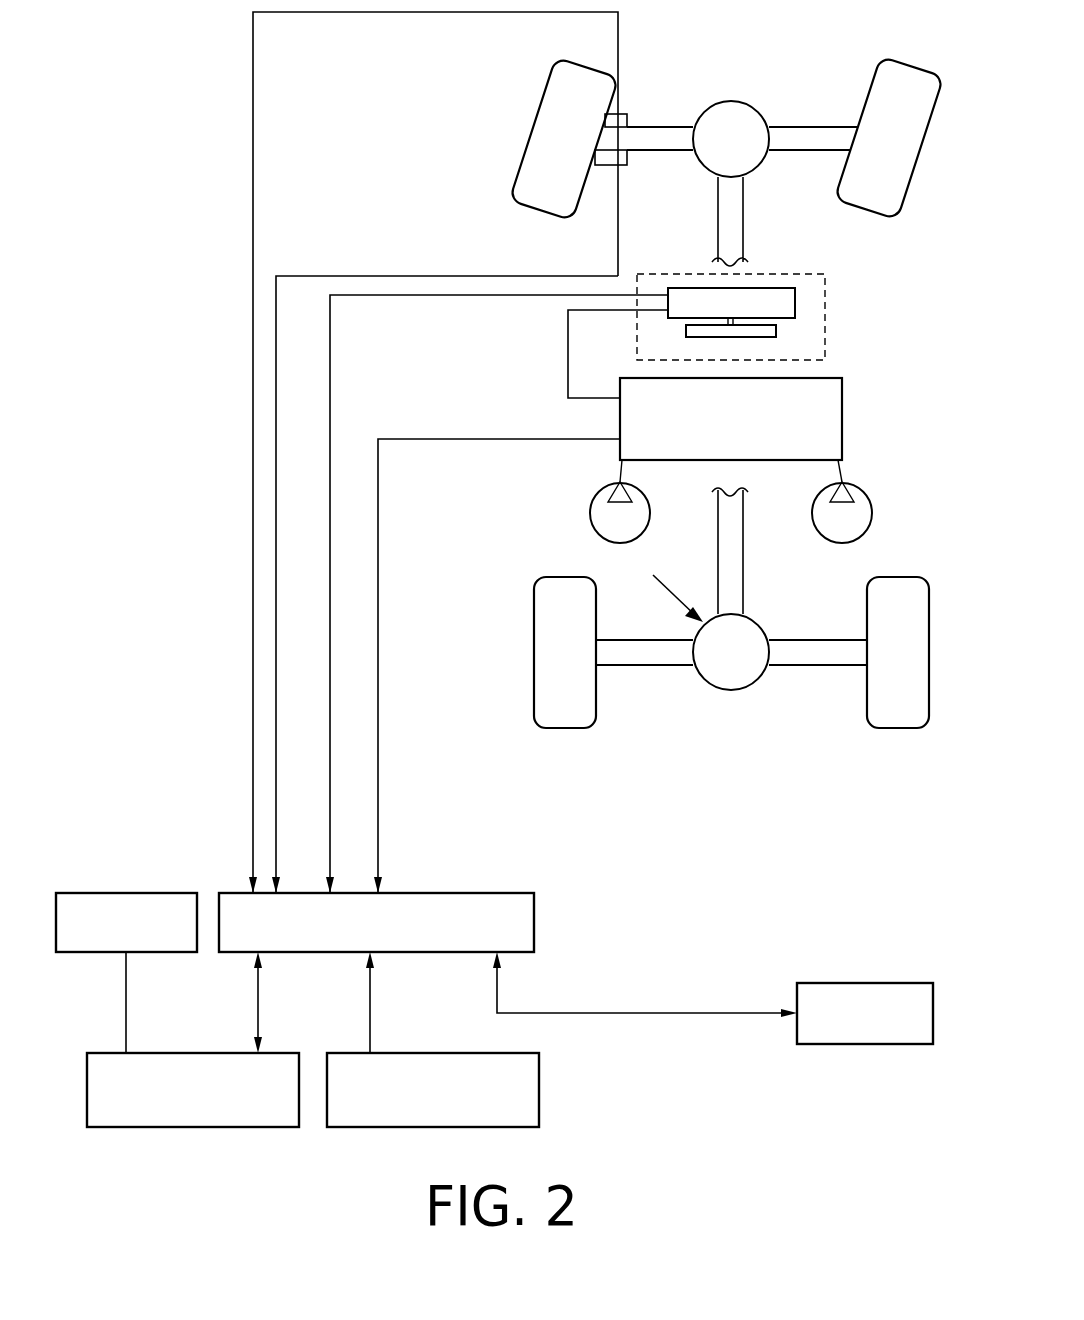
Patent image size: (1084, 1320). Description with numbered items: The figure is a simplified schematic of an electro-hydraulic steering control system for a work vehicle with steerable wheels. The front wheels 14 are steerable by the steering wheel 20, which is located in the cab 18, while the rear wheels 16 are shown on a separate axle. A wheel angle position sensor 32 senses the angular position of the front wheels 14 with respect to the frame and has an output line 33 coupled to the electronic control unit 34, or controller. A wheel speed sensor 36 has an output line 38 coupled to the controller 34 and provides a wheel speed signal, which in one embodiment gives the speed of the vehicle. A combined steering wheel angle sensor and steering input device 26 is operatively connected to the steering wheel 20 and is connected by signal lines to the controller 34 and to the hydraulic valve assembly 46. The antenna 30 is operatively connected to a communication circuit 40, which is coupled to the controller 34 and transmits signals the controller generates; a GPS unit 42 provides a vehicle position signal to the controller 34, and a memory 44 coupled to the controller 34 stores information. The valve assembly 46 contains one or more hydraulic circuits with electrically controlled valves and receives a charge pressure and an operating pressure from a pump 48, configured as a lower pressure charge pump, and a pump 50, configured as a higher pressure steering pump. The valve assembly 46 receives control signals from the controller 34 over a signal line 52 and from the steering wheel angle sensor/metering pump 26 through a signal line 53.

The front wheels 14 is at (533, 135).
The rear wheels 16 is at (565, 730).
The cab 18 is at (826, 343).
The steering wheel 20 is at (776, 331).
The steering wheel angle sensor and steering input device 26 is at (778, 288).
The antenna 30 is at (82, 892).
The wheel angle position sensor 32 is at (628, 118).
The output line 33 is at (253, 243).
The electronic control unit 34 is at (472, 892).
The wheel speed sensor 36 is at (630, 158).
The output line 38 is at (312, 276).
The communication circuit 40 is at (193, 1127).
The GPS unit 42 is at (542, 1093).
The memory 44 is at (903, 983).
The valve assembly 46 is at (842, 418).
The pump 48 is at (590, 513).
The pump 50 is at (872, 513).
The signal line 52 is at (422, 439).
The signal line 53 is at (568, 354).